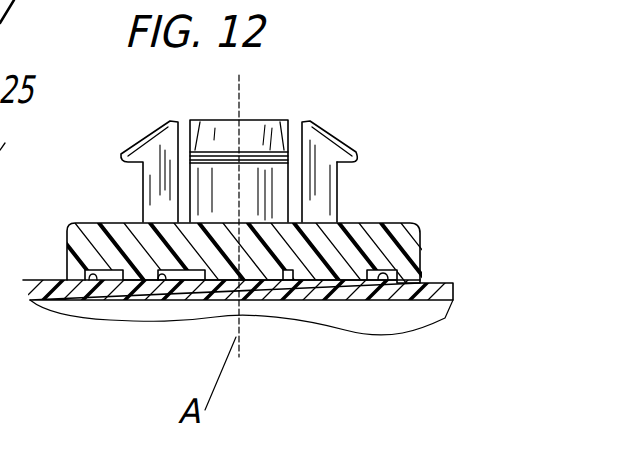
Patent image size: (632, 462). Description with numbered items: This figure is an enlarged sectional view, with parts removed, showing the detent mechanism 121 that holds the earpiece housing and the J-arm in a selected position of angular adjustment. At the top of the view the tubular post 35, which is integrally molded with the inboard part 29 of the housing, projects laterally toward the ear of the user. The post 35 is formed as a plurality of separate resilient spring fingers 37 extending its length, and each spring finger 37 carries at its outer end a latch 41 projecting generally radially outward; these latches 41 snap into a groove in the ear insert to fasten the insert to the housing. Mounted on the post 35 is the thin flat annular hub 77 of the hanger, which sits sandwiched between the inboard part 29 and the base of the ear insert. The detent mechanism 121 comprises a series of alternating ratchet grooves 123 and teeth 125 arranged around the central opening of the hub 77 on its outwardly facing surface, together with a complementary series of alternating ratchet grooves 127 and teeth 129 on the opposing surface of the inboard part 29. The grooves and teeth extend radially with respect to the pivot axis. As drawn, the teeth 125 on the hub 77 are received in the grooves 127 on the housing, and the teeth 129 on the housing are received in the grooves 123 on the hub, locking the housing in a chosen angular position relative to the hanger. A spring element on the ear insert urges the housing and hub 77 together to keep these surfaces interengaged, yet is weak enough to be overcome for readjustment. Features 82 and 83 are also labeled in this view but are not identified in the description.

The tubular post 35 is at (262, 109).
The latch 41 is at (349, 150).
The resilient spring finger 37 is at (337, 190).
The ratchet groove 123 is at (104, 265).
The tooth 125 is at (383, 277).
The annular hub 77 is at (423, 228).
The detent mechanism 121 is at (445, 270).
The inboard part 29 is at (453, 302).
The central recess 83 is at (287, 283).
The recess 82 is at (203, 280).
The ratchet groove 127 is at (160, 280).
The tooth 129 is at (101, 280).